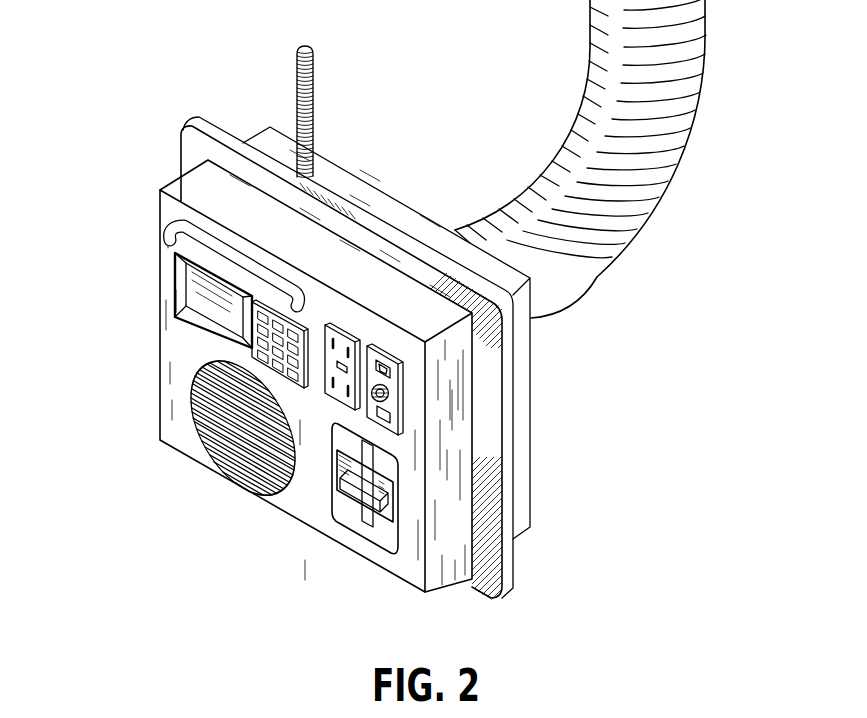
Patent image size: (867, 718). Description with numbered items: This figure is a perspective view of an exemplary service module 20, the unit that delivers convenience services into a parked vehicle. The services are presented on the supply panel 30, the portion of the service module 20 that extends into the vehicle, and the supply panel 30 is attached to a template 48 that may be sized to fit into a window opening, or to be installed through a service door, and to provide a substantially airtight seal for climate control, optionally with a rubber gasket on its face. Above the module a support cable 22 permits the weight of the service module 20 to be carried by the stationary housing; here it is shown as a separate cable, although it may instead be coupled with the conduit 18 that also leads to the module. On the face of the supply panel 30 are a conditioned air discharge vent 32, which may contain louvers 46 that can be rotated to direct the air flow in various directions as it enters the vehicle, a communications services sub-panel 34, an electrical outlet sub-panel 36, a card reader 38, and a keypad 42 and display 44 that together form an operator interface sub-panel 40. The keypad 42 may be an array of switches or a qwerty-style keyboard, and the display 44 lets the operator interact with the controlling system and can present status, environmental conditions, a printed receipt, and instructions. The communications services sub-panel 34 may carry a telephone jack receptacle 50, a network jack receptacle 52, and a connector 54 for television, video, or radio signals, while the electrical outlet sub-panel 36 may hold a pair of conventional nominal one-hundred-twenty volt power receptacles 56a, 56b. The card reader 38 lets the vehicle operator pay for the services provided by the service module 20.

The conduit 18 is at (702, 38).
The service module 20 is at (451, 323).
The support cable 22 is at (313, 80).
The supply panel 30 is at (423, 598).
The conditioned air discharge vent 32 is at (205, 455).
The communications services sub-panel 34 is at (476, 296).
The electrical outlet sub-panel 36 is at (335, 343).
The card reader 38 is at (377, 538).
The operator interface sub-panel 40 is at (168, 261).
The keypad 42 is at (253, 324).
The display 44 is at (212, 300).
The louvers 46 is at (246, 488).
The template 48 is at (513, 571).
The telephone jack receptacle 50 is at (391, 434).
The network jack receptacle 52 is at (391, 374).
The connector 54 is at (389, 406).
The power receptacle 56a is at (325, 340).
The power receptacle 56b is at (325, 382).